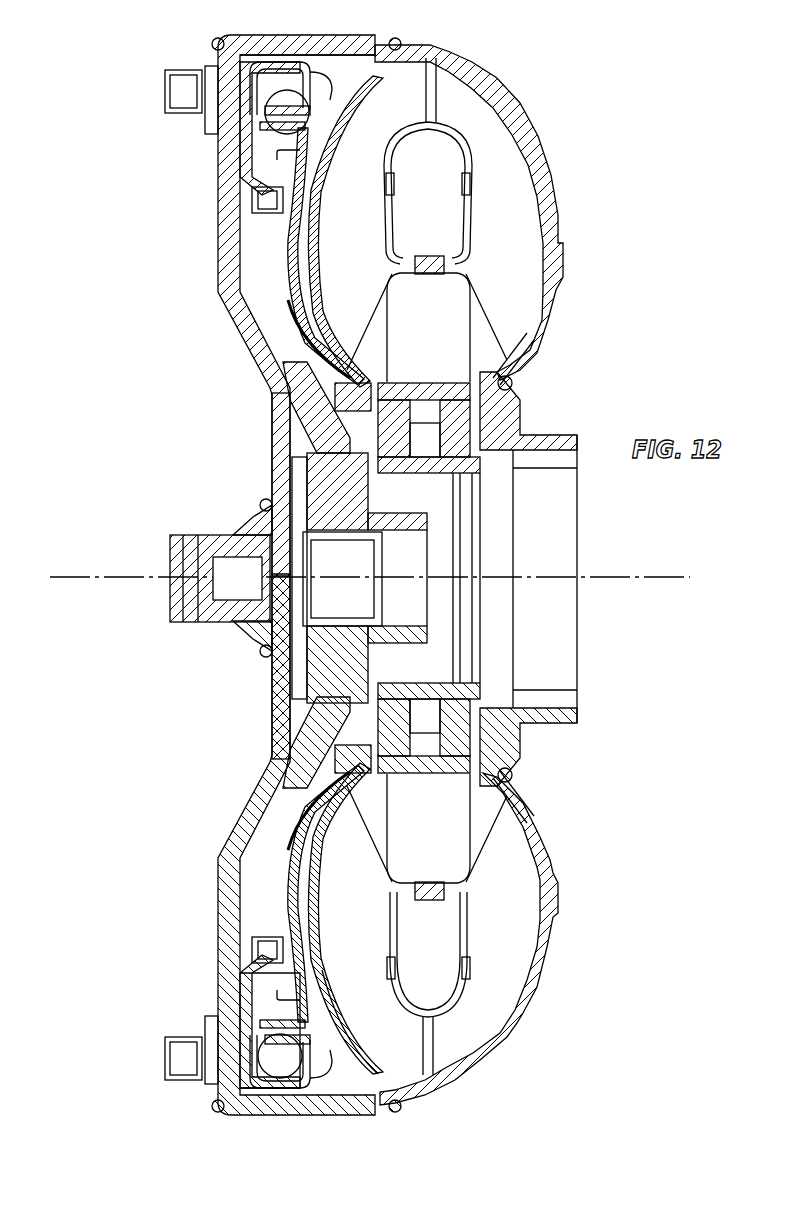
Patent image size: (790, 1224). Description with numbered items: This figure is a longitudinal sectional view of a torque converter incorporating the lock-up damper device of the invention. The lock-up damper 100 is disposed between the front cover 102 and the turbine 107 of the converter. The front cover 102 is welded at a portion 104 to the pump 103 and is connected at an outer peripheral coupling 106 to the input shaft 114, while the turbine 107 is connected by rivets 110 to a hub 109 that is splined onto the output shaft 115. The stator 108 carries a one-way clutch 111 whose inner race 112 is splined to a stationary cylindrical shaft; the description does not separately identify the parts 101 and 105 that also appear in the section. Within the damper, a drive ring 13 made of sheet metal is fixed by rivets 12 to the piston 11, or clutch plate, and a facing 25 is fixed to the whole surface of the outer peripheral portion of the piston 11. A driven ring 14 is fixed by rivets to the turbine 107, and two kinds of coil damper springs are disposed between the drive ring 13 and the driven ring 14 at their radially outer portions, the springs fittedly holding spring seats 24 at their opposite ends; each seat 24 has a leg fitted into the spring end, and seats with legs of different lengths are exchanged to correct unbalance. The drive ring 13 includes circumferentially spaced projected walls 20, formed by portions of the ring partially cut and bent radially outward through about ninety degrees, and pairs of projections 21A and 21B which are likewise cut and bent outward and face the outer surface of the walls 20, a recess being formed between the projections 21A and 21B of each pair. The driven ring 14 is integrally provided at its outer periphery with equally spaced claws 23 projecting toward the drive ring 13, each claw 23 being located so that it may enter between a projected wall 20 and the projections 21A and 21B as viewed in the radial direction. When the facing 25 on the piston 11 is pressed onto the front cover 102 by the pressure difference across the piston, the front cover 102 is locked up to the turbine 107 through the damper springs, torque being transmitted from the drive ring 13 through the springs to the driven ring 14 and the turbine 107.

The piston 11 is at (273, 298).
The rivets 12 is at (255, 203).
The drive ring 13 is at (258, 1072).
The driven ring 14 is at (293, 918).
The projected walls 20 is at (327, 137).
The projection 21A is at (322, 1055).
The projection 21B is at (312, 72).
The claws 23 is at (287, 90).
The spring seats 24 is at (312, 108).
The facing 25 is at (218, 1046).
The lock-up damper 100 is at (322, 82).
The dome housing 101 is at (548, 133).
The front cover 102 is at (218, 270).
The pump 103 is at (548, 240).
The welded portion 104 is at (400, 40).
The housing 105 is at (227, 190).
The outer peripheral coupling 106 is at (180, 87).
The turbine 107 is at (370, 223).
The stator 108 is at (455, 342).
The hub 109 is at (417, 640).
The rivets 110 is at (345, 387).
The one-way clutch 111 is at (432, 452).
The inner race 112 is at (463, 693).
The input shaft 114 is at (88, 577).
The output shaft 115 is at (612, 578).